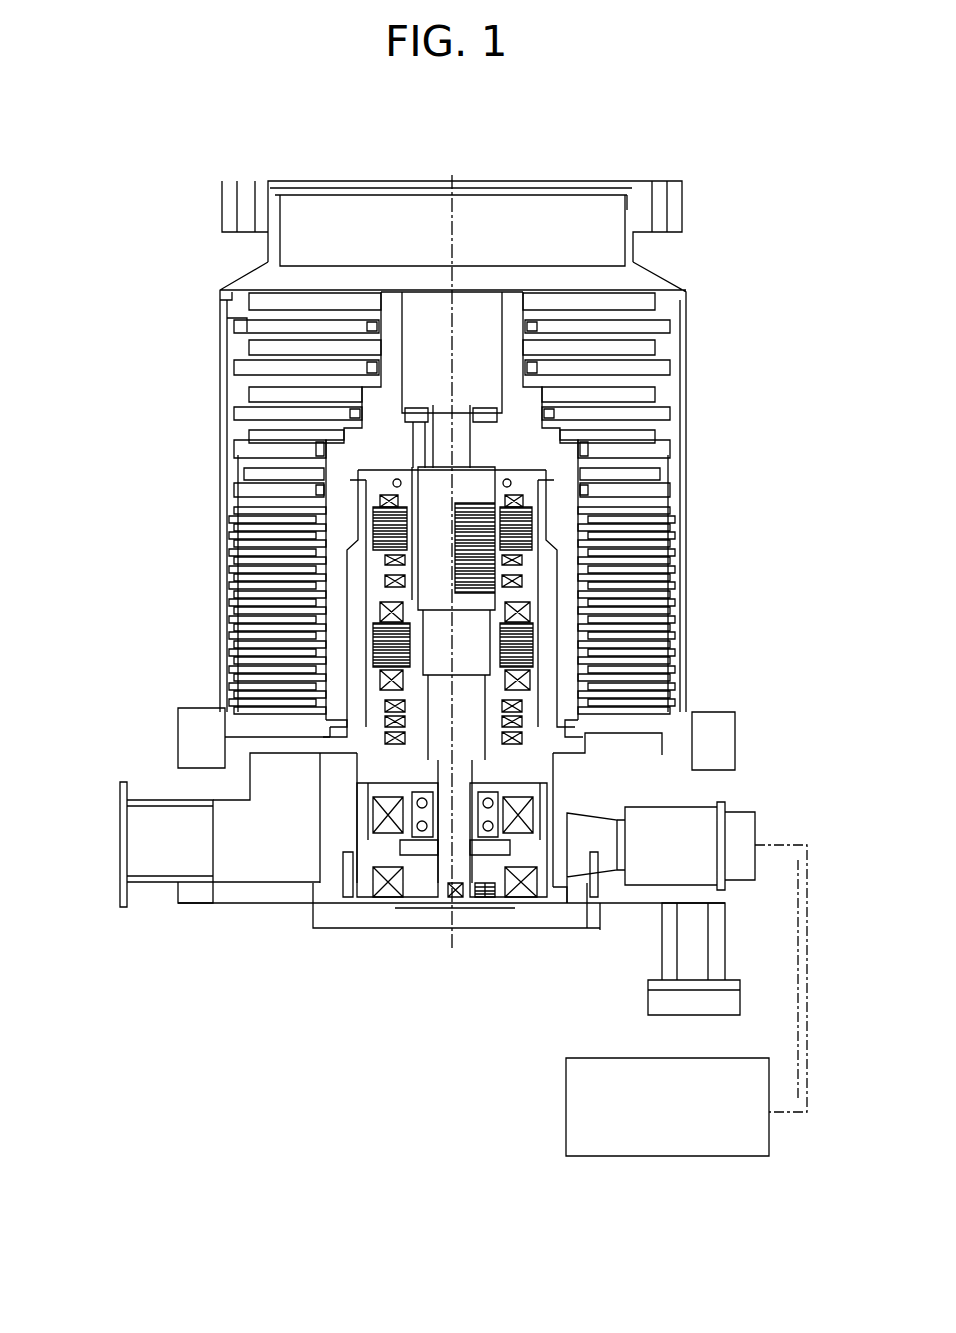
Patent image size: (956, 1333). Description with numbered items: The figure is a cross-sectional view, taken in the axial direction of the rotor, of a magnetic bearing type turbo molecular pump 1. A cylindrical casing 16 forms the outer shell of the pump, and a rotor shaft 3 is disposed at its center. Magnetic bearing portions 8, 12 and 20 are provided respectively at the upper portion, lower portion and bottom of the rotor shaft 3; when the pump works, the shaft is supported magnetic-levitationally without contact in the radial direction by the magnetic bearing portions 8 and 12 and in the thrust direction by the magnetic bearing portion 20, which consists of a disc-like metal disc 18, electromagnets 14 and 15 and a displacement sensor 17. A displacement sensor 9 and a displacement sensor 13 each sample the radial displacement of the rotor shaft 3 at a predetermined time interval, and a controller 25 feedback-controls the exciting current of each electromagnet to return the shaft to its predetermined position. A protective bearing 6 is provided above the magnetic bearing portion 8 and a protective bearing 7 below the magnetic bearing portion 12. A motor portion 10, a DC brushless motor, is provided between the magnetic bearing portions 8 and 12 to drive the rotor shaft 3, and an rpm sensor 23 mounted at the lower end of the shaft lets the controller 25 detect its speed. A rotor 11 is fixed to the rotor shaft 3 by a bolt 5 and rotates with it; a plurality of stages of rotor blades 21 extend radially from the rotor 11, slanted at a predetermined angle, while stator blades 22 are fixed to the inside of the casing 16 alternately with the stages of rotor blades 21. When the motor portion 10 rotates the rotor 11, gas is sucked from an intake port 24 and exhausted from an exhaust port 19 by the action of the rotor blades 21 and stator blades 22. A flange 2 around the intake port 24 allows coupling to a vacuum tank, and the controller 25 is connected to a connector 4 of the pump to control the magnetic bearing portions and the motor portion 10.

The turbo molecular pump 1 is at (85, 190).
The flange 2 is at (688, 207).
The rotor shaft 3 is at (552, 776).
The connector 4 is at (758, 818).
The bolt 5 is at (418, 412).
The protective bearing 6 is at (377, 472).
The protective bearing 7 is at (368, 818).
The magnetic bearing portion 8 is at (364, 514).
The displacement sensor 9 is at (366, 578).
The motor portion 10 is at (366, 641).
The rotor 11 is at (560, 476).
The magnetic bearing portion 12 is at (366, 746).
The displacement sensor 13 is at (366, 704).
The electromagnet 14 is at (413, 790).
The electromagnet 15 is at (387, 896).
The casing 16 is at (690, 372).
The displacement sensor 17 is at (448, 897).
The metal disc 18 is at (417, 853).
The exhaust port 19 is at (117, 817).
The magnetic bearing portion 20 is at (368, 896).
The rotor blades 21 is at (220, 303).
The stator blades 22 is at (240, 325).
The rpm sensor 23 is at (493, 900).
The intake port 24 is at (523, 172).
The controller 25 is at (600, 1160).